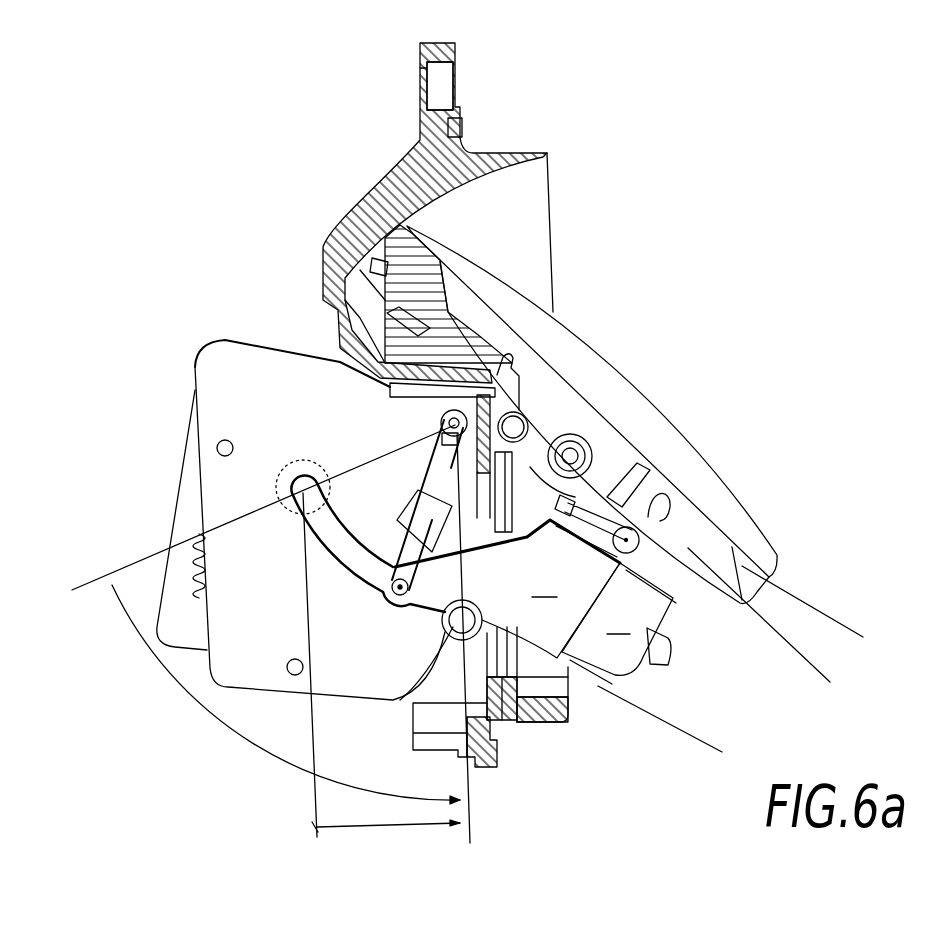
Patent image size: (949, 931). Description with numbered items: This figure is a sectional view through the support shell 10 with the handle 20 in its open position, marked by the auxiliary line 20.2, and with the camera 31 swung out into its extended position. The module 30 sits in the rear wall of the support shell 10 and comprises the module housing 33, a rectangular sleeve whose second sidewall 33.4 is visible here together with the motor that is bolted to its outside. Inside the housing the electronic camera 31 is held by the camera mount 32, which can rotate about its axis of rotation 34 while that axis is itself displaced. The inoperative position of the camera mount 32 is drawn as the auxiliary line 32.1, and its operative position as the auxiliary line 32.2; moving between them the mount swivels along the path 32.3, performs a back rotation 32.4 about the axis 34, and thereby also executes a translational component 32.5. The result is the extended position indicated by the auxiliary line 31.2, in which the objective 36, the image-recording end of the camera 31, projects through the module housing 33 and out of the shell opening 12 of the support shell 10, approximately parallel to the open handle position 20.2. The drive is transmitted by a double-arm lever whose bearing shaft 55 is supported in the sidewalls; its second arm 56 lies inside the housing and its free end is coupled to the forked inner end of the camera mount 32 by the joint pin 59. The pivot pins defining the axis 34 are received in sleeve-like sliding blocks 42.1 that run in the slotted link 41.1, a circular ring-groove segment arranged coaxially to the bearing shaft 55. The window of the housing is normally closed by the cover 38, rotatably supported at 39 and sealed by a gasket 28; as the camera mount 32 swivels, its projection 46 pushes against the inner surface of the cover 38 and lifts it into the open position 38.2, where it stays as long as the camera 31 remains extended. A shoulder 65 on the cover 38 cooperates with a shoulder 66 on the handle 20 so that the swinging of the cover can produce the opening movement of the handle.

The support shell 10 is at (548, 153).
The shell opening 12 is at (532, 206).
The handle 20 is at (583, 395).
The open position of the handle 20.2 is at (820, 668).
The gasket 28 is at (513, 693).
The module 30 is at (207, 340).
The electronic camera 31 is at (619, 623).
The extended position of the camera 31.2 is at (722, 750).
The camera mount 32 is at (507, 558).
The inoperative position of the camera mount 32.1 is at (72, 590).
The operative position of the camera mount 32.2 is at (472, 837).
The rotational path of the camera mount 32.3 is at (243, 737).
The back rotation of the camera mount 32.4 is at (570, 700).
The translational component 32.5 is at (458, 824).
The module housing 33 is at (223, 687).
The second sidewall 33.4 is at (227, 388).
The axis of rotation 34 is at (458, 610).
The objective 36 is at (663, 657).
The cover 38 is at (690, 548).
The open position of the cover 38.2 is at (833, 613).
The rotatable support of the cover 39 is at (514, 420).
The slotted link 41.1 is at (342, 547).
The sliding block 42.1 is at (447, 630).
The actuator (projection) 46 is at (640, 540).
The bearing shaft 55 is at (442, 420).
The second arm 56 is at (440, 470).
The joint pin 59 is at (397, 600).
The shoulder on the cover 65 is at (668, 498).
The cooperating shoulder on the handle 66 is at (625, 462).